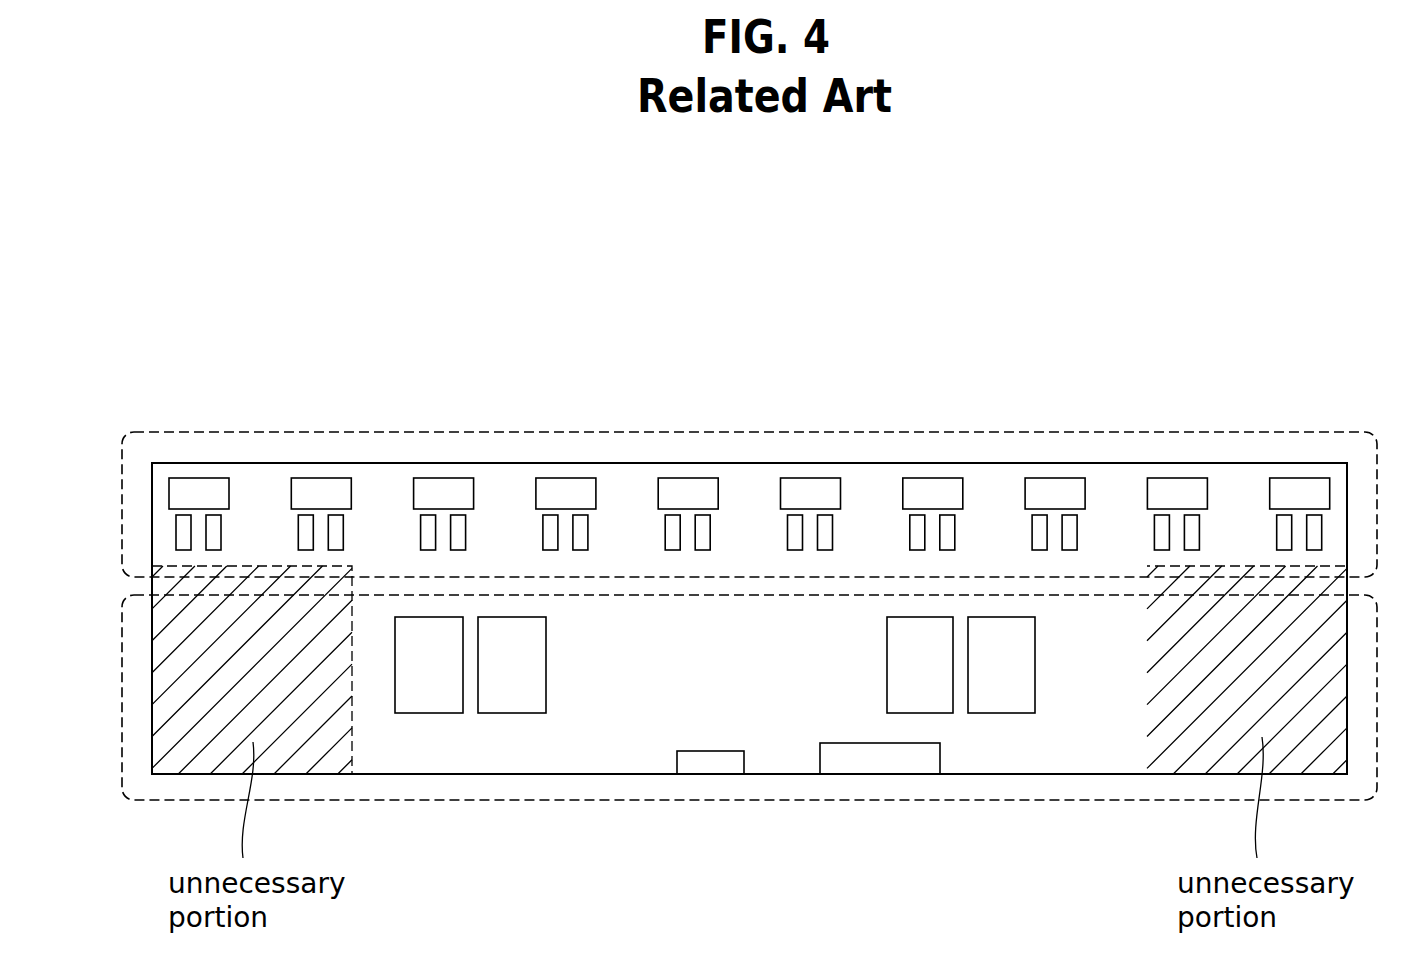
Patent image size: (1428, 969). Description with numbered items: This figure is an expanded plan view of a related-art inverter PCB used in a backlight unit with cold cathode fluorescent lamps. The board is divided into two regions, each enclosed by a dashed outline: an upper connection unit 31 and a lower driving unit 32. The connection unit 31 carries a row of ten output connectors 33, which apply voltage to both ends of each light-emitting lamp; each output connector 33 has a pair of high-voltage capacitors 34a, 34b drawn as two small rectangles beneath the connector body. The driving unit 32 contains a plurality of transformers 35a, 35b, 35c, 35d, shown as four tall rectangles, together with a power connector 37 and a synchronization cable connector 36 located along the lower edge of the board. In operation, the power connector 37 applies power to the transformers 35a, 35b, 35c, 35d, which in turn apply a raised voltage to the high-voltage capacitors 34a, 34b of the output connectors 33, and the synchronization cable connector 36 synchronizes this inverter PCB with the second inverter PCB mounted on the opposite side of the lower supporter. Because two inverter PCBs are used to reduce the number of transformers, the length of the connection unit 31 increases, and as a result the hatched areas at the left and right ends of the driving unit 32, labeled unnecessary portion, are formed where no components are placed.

The connection unit 31 is at (850, 430).
The driving unit 32 is at (1092, 802).
The output connector 33 is at (578, 488).
The high-voltage capacitor 34a is at (430, 535).
The high-voltage capacitor 34b is at (463, 535).
The transformer 35a is at (431, 702).
The transformer 35b is at (518, 702).
The transformer 35c is at (888, 655).
The transformer 35d is at (1024, 668).
The synchronization cable connector 36 is at (710, 760).
The power connector 37 is at (878, 760).